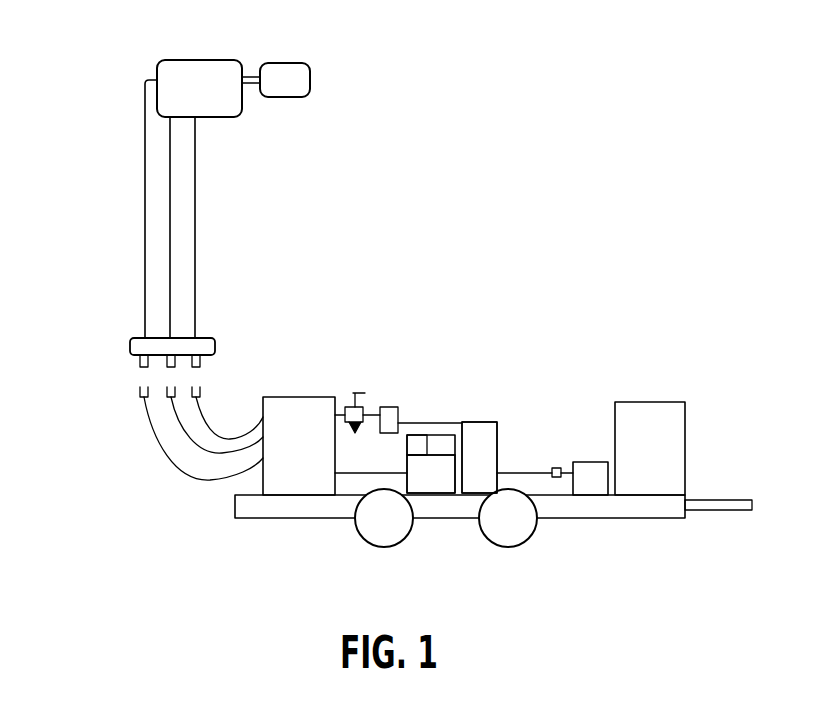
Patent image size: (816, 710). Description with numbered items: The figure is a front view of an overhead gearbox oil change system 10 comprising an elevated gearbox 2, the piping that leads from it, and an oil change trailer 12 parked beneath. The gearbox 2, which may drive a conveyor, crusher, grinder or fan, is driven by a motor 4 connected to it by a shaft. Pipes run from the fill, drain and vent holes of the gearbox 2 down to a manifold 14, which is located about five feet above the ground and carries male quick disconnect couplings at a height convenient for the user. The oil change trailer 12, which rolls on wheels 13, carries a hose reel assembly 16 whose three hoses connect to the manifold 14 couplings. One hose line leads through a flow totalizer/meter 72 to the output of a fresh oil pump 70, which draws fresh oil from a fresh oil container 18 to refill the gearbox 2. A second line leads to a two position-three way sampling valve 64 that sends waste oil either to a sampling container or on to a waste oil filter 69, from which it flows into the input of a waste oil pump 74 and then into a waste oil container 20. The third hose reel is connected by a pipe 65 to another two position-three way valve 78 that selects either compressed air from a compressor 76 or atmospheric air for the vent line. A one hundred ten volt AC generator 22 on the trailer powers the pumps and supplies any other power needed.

The gearbox 2 is at (153, 73).
The motor 4 is at (290, 83).
The overhead gearbox oil change system 10 is at (398, 160).
The oil change trailer 12 is at (260, 510).
The wheels 13 is at (377, 528).
The manifold 14 is at (140, 347).
The hose reel assembly 16 is at (272, 475).
The fresh oil container 18 is at (423, 478).
The waste oil container 20 is at (473, 487).
The generator 22 is at (653, 475).
The sampling valve 64 is at (356, 393).
The pipe 65 is at (530, 470).
The waste oil filter 69 is at (388, 412).
The fresh oil pump 70 is at (438, 435).
The flow totalizer/meter 72 is at (417, 443).
The waste oil pump 74 is at (482, 427).
The compressor 76 is at (592, 483).
The two position-three way valve 78 is at (557, 478).